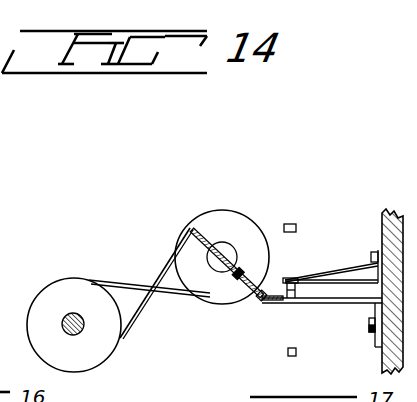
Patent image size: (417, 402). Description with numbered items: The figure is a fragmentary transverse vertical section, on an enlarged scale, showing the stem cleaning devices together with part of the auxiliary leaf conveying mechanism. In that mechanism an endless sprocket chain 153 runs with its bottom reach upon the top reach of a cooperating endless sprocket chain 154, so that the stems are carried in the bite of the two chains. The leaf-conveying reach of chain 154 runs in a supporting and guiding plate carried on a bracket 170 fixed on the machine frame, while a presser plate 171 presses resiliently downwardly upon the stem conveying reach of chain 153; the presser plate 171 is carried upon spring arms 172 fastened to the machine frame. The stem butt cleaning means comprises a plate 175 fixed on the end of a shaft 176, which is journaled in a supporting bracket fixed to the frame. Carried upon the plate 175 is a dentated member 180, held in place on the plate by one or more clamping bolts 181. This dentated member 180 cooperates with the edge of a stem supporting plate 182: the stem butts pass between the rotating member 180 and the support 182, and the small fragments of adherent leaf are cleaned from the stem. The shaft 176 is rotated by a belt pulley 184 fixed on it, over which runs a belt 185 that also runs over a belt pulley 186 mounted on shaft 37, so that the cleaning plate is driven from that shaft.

The shaft 37 is at (72, 313).
The endless sprocket chain 153 is at (297, 225).
The endless sprocket chain 154 is at (289, 300).
The bracket 170 is at (345, 303).
The presser plate 171 is at (293, 280).
The spring arms 172 is at (350, 280).
The plate 175 is at (200, 232).
The shaft 176 is at (226, 247).
The dentated member 180 is at (254, 298).
The clamping bolts 181 is at (236, 280).
The stem supporting plate 182 is at (283, 278).
The belt pulley 184 is at (257, 225).
The belt 185 is at (177, 298).
The belt pulley 186 is at (83, 372).